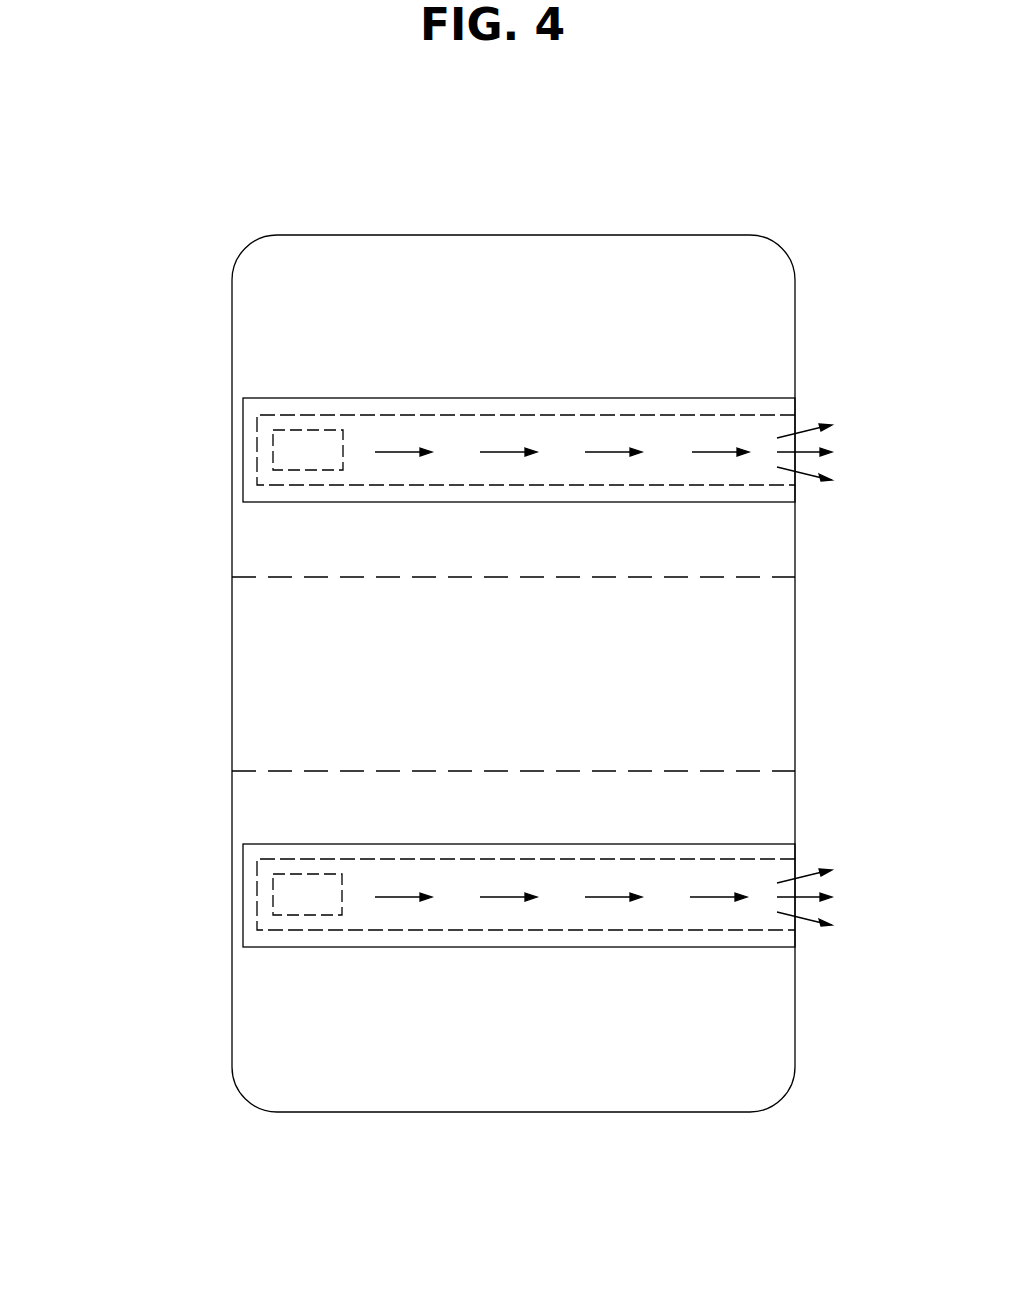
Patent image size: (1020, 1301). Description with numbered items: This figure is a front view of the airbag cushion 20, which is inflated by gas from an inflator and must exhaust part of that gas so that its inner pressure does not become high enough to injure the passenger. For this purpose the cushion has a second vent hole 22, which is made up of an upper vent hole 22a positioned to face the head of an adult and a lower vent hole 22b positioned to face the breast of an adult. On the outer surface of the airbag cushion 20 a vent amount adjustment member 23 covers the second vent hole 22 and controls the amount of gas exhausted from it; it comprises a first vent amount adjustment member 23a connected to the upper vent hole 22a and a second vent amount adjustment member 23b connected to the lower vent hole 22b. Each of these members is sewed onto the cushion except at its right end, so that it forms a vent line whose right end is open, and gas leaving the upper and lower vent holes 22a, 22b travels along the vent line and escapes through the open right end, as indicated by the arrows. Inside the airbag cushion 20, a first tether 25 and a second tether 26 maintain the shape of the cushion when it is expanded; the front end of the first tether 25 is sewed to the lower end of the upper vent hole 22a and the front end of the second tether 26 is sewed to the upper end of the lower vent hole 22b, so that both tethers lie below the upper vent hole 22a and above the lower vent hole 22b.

The airbag cushion 20 is at (221, 122).
The second vent hole 22 is at (398, 660).
The upper vent hole 22a is at (322, 443).
The lower vent hole 22b is at (323, 888).
The vent amount adjustment member 23 is at (103, 485).
The first vent amount adjustment member 23a is at (490, 484).
The second vent amount adjustment member 23b is at (474, 941).
The first tether 25 is at (735, 577).
The second tether 26 is at (735, 771).